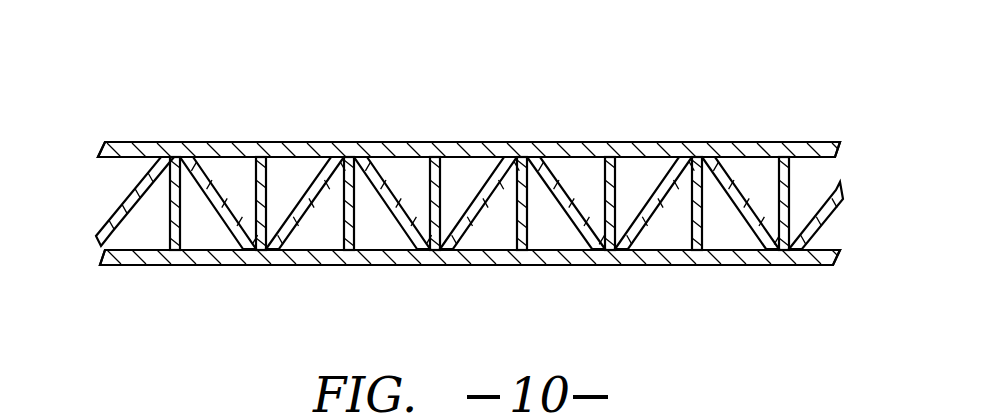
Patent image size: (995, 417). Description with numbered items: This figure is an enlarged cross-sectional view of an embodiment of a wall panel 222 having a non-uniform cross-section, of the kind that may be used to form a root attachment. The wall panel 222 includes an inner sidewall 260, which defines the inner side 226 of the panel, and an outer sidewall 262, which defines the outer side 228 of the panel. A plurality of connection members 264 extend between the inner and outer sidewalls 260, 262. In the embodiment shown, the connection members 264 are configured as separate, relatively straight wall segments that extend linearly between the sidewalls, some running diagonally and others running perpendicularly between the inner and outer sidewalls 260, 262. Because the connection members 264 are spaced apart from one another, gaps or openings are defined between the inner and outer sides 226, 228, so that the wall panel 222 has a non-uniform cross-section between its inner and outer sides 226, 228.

The wall panel 222 is at (448, 164).
The outer sidewall 262 is at (107, 150).
The outer side 228 is at (442, 142).
The inner sidewall 260 is at (107, 253).
The inner side 226 is at (580, 266).
The connection members 264 is at (314, 178).